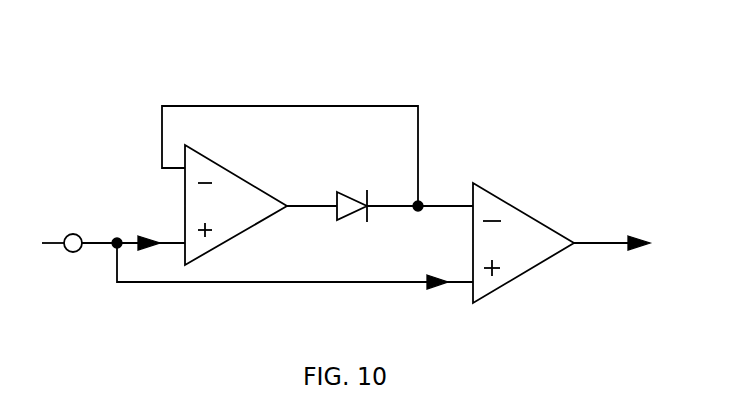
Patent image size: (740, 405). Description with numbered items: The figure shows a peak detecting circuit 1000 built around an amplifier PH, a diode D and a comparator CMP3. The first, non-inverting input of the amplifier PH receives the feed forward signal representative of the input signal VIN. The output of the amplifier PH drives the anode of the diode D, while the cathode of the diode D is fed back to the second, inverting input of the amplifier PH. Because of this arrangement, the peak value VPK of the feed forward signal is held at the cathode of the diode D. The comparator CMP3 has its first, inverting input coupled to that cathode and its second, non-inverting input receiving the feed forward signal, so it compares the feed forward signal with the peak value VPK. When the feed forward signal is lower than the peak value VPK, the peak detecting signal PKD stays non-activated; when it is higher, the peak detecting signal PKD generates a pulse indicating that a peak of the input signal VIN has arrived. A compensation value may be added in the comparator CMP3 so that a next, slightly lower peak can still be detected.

The peak detecting circuit 1000 is at (97, 139).
The amplifier PH is at (236, 205).
The diode D is at (352, 218).
The peak value VPK is at (421, 220).
The input signal VIN is at (113, 259).
The comparator CMP3 is at (523, 243).
The peak detecting signal PKD is at (612, 261).